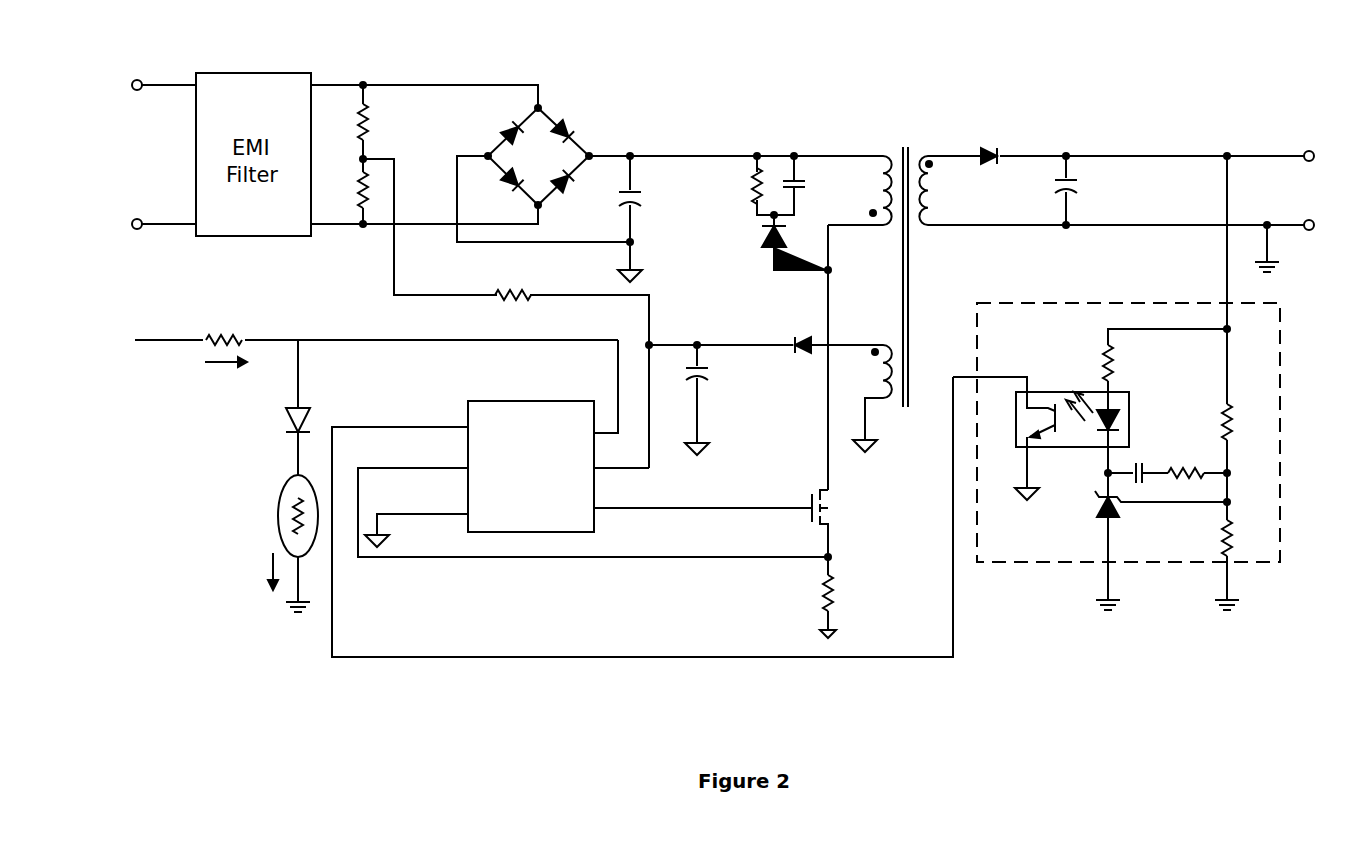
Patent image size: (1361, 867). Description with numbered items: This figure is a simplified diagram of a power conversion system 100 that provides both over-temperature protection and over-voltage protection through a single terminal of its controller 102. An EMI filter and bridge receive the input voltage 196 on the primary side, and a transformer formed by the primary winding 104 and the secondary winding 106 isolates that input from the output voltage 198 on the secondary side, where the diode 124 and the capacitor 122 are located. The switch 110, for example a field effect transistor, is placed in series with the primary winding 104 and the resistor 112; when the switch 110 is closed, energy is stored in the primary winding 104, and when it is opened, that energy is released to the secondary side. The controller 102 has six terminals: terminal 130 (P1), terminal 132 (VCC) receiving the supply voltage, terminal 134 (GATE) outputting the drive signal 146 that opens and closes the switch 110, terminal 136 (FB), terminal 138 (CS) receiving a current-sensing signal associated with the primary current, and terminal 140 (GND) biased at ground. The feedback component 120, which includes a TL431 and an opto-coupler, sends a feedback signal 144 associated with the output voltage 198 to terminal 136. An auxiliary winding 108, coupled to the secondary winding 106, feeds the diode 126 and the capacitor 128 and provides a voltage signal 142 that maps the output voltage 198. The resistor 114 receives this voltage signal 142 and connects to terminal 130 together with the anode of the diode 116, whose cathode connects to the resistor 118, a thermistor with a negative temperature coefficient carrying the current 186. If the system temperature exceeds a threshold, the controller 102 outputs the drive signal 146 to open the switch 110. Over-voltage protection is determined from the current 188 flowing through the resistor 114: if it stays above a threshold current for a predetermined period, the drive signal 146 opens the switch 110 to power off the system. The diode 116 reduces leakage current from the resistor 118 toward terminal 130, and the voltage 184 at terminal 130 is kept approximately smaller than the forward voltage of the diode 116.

The power conversion system 100 is at (263, 691).
The controller 102 is at (467, 404).
The primary winding 104 is at (888, 155).
The secondary winding 106 is at (924, 155).
The auxiliary winding 108 is at (886, 340).
The switch 110 is at (832, 500).
The resistor 112 is at (835, 600).
The resistor 114 is at (248, 338).
The diode 116 is at (288, 406).
The resistor 118 is at (276, 495).
The feedback component 120 is at (1283, 308).
The capacitor 122 is at (1080, 190).
The diode 124 is at (992, 149).
The diode 126 is at (804, 340).
The capacitor 128 is at (706, 372).
The terminal 130 is at (596, 436).
The terminal 132 is at (596, 471).
The terminal 134 is at (596, 511).
The terminal 136 is at (466, 431).
The terminal 138 is at (466, 472).
The terminal 140 is at (466, 518).
The voltage signal 142 is at (172, 340).
The feedback signal 144 is at (953, 592).
The drive signal 146 is at (739, 508).
The voltage 184 is at (296, 340).
The current 186 is at (271, 562).
The current 188 is at (214, 366).
The input voltage 196 is at (151, 119).
The output voltage 198 is at (1295, 172).